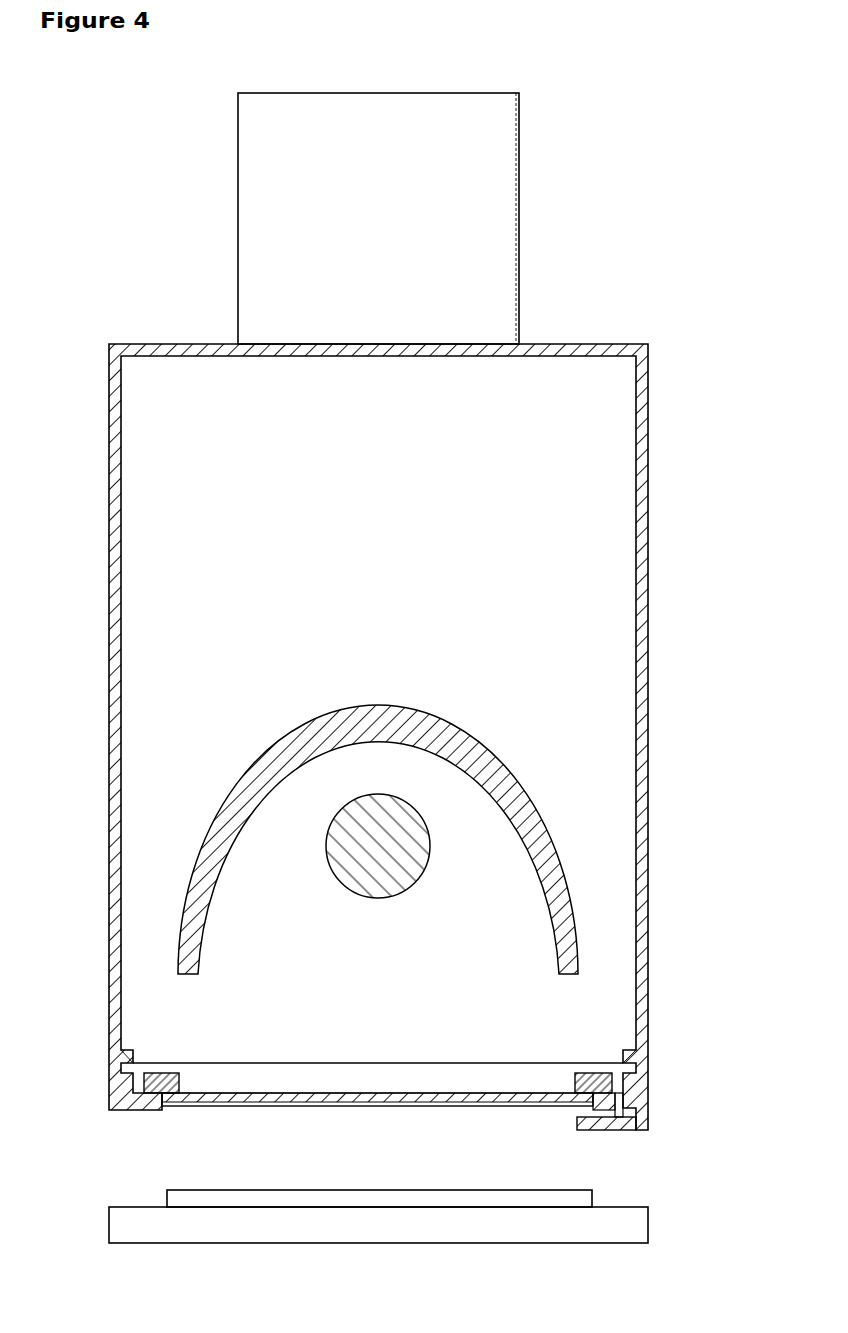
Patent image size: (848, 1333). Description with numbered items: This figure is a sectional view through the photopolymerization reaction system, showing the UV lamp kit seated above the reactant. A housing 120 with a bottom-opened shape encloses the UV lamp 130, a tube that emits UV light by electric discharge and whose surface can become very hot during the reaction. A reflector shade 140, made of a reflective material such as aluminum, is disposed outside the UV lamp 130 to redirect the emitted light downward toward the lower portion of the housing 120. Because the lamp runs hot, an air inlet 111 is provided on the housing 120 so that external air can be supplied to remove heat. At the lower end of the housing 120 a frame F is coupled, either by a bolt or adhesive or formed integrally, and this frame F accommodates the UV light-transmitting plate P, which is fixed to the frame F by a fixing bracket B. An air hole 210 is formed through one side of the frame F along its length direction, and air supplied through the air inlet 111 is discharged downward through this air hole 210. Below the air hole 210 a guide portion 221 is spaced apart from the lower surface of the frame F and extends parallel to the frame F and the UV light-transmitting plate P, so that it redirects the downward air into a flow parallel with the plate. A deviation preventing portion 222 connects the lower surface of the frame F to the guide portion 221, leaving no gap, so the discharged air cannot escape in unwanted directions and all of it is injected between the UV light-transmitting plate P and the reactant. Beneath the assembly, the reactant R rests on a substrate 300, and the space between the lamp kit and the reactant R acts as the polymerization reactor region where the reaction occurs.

The air inlet 111 is at (497, 207).
The housing 120 is at (644, 448).
The UV lamp 130 is at (397, 828).
The reflector shade 140 is at (532, 830).
The frame F is at (113, 1079).
The fixing bracket B is at (168, 1094).
The UV light-transmitting plate P is at (355, 1103).
The guide portion 221 is at (590, 1129).
The air hole 210 is at (619, 1111).
The deviation preventing portion 222 is at (645, 1118).
The reactant R is at (592, 1198).
The substrate 300 is at (643, 1238).